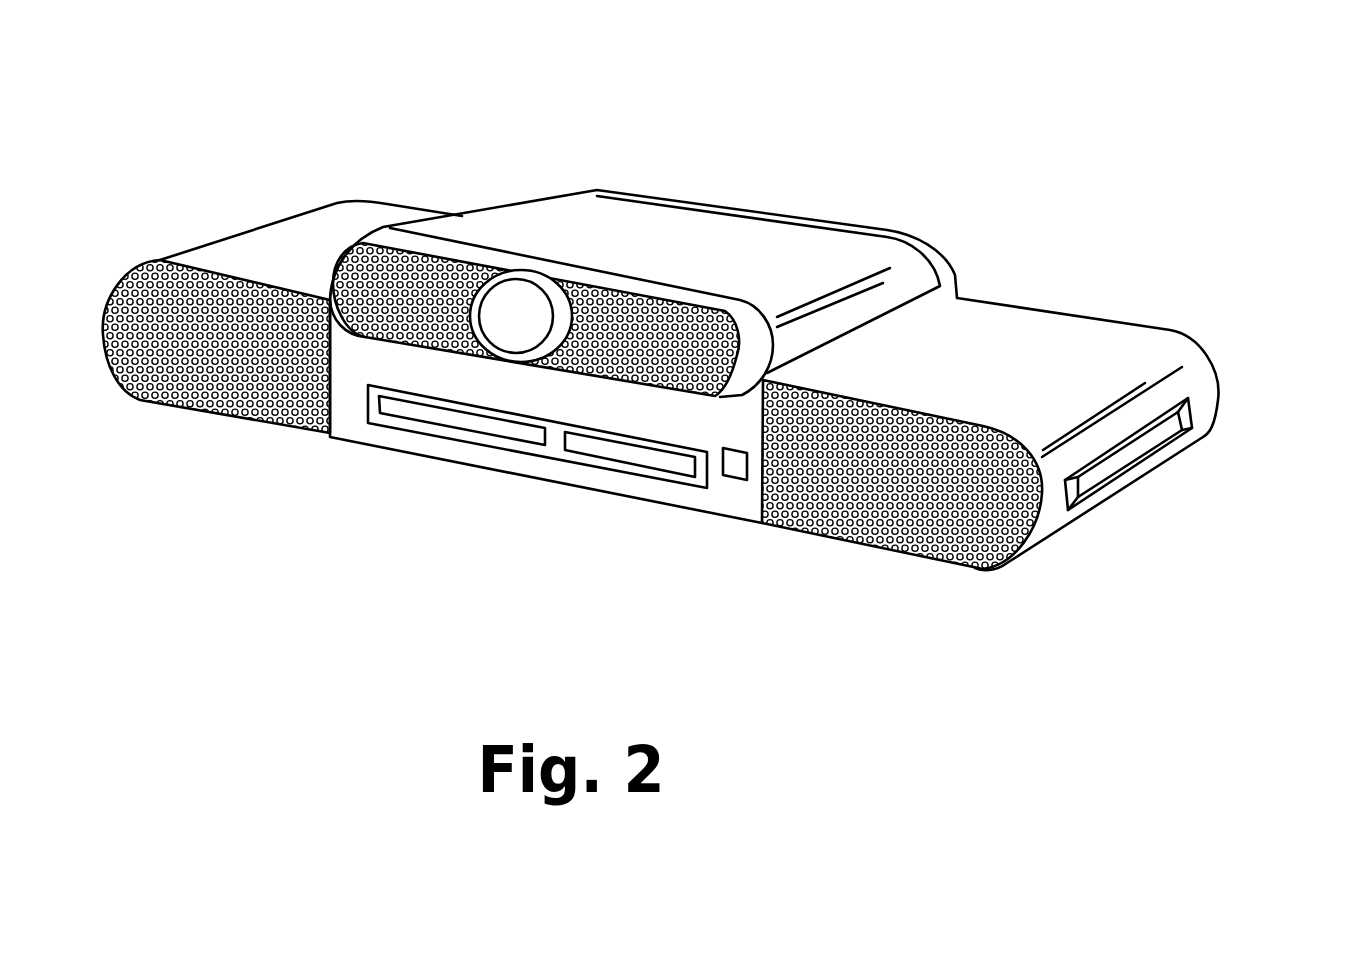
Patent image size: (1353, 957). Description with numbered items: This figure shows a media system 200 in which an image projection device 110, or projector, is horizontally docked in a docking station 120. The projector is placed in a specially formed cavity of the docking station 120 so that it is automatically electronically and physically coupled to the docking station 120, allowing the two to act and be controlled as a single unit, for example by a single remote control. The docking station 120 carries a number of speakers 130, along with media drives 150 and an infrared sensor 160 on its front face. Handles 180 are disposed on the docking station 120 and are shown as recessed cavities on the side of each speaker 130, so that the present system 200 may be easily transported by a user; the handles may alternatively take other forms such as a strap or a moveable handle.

The system 200 is at (433, 139).
The image projection device 110 is at (677, 237).
The docking station 120 is at (1078, 342).
The speaker 130 is at (930, 527).
The media drives 150 is at (452, 418).
The infrared (I/R) sensor 160 is at (735, 467).
The handles 180 is at (1120, 458).